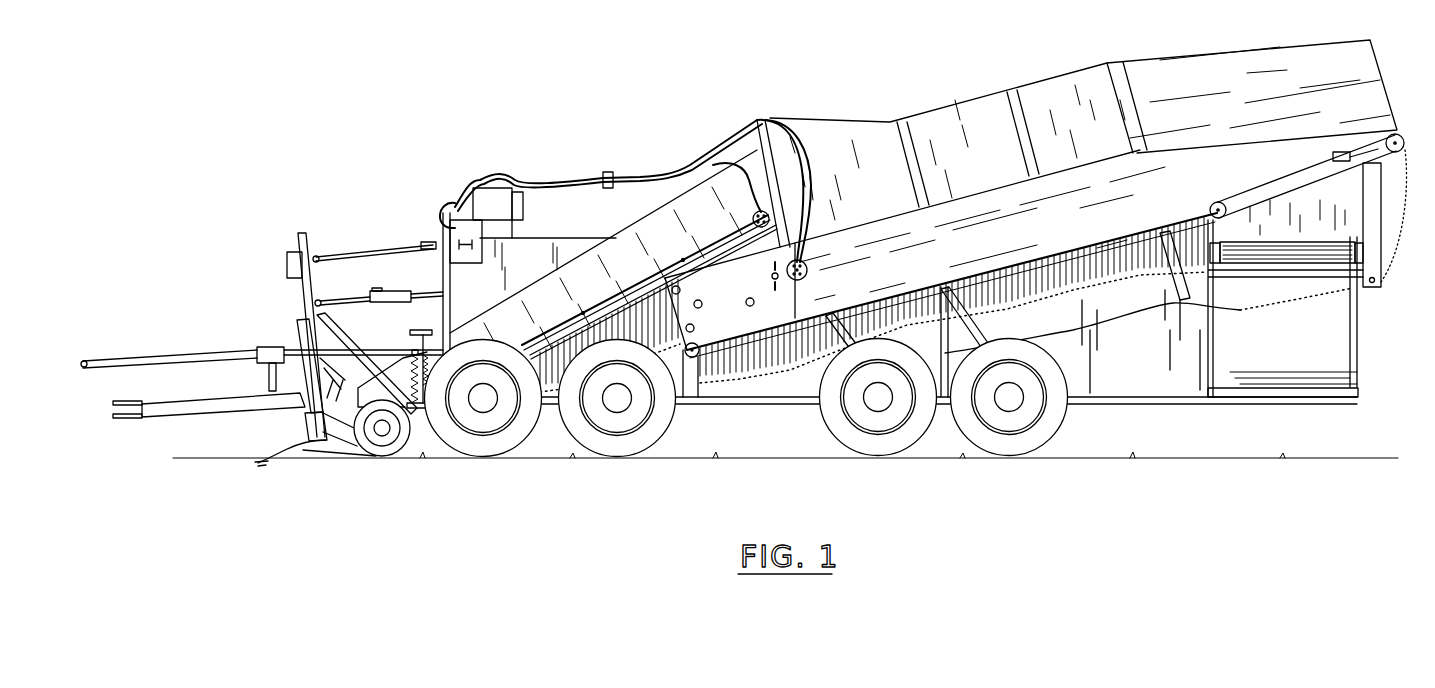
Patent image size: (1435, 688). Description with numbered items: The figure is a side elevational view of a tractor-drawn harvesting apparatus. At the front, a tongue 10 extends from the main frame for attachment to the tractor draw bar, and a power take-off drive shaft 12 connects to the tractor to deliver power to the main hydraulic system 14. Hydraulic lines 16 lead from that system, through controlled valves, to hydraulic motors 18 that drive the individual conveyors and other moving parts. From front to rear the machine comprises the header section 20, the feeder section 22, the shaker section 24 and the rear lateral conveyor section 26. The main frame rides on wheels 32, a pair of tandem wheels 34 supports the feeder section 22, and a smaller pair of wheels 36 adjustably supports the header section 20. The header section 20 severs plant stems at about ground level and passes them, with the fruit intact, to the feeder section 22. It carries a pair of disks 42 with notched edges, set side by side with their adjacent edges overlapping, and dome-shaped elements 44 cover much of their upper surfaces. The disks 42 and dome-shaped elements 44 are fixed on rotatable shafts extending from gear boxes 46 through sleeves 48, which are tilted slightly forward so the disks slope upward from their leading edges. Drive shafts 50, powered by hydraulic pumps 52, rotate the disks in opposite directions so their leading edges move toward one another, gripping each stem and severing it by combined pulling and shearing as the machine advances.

The tongue 10 is at (203, 407).
The power take-off drive shaft 12 is at (222, 354).
The main hydraulic system 14 is at (508, 167).
The hydraulic lines 16 is at (453, 193).
The hydraulic motors 18 is at (752, 218).
The header section 20 is at (285, 233).
The feeder section 22 is at (537, 262).
The shaker section 24 is at (932, 92).
The rear lateral conveyor section 26 is at (1342, 220).
The wheels 32 is at (966, 437).
The tandem wheels 34 is at (588, 437).
The smaller wheels 36 is at (395, 455).
The disks 42 is at (263, 467).
The dome-shaped elements 44 is at (307, 442).
The gear boxes 46 is at (290, 266).
The sleeves 48 is at (298, 327).
The drive shafts 50 is at (373, 250).
The hydraulic pumps 52 is at (459, 245).